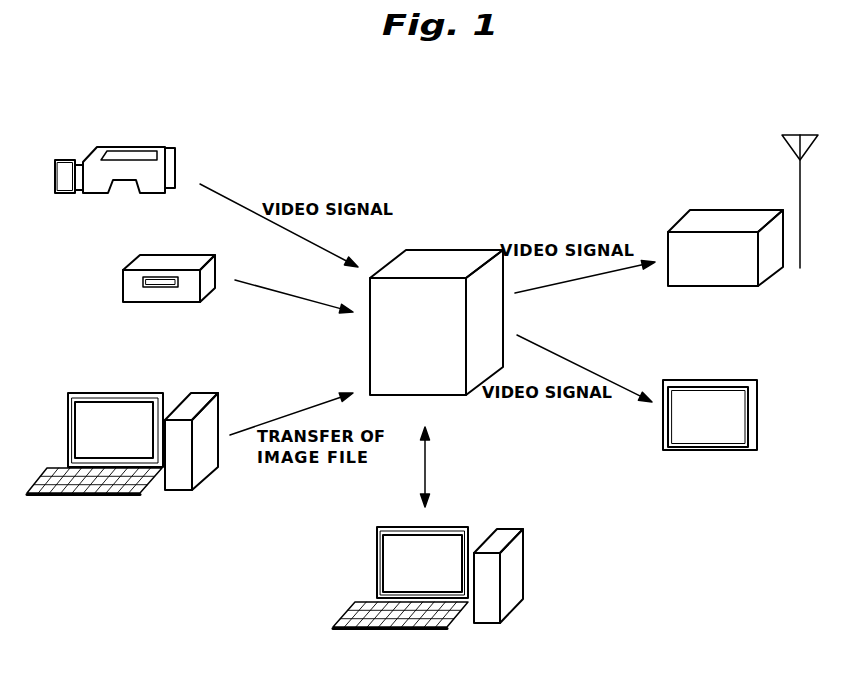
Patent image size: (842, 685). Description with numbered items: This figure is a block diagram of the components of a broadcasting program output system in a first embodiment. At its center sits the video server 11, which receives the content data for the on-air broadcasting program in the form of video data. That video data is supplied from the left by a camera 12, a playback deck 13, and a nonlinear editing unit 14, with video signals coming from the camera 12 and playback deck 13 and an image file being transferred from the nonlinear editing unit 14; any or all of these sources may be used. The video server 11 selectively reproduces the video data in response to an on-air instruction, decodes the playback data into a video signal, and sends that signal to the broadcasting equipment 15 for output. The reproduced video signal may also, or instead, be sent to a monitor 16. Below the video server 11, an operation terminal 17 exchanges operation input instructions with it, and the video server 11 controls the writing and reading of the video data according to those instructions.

The video server 11 is at (447, 250).
The camera 12 is at (137, 147).
The playback deck 13 is at (188, 255).
The nonlinear editing unit 14 is at (125, 393).
The broadcasting equipment 15 is at (728, 210).
The monitor 16 is at (728, 380).
The operation terminal 17 is at (458, 527).